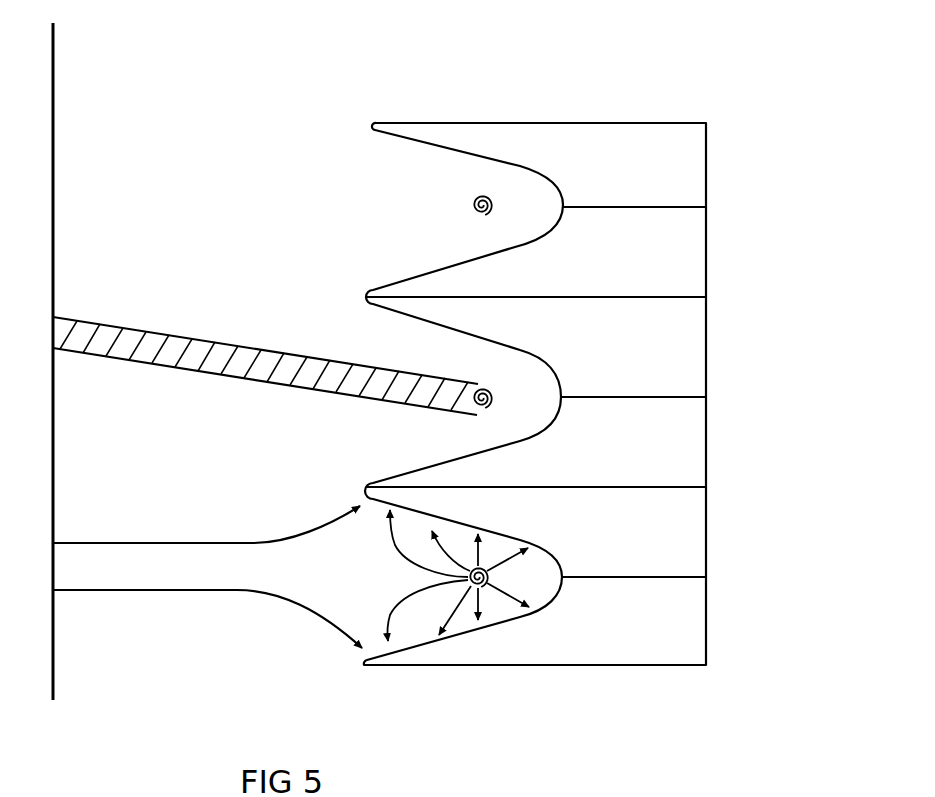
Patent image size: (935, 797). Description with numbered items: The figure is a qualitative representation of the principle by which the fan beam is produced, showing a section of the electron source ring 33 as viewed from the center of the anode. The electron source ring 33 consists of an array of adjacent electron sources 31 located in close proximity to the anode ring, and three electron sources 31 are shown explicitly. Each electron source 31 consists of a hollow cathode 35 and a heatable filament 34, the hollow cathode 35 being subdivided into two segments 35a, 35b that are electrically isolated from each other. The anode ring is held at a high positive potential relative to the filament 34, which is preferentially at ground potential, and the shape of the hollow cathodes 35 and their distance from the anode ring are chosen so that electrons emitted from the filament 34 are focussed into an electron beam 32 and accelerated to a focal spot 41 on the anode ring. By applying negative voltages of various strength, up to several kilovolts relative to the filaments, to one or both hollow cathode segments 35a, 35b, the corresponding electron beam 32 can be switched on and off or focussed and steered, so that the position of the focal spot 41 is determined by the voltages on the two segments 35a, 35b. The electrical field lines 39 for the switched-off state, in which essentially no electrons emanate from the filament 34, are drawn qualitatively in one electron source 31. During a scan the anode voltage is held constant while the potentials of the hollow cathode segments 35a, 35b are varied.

The electron source 31 is at (475, 198).
The electron beam 32 is at (225, 343).
The electron source ring 33 is at (707, 550).
The heatable filament 34 is at (472, 198).
The hollow cathode 35 is at (605, 250).
The hollow cathode segment 35a is at (692, 157).
The hollow cathode segment 35b is at (693, 240).
The electrical field lines 39 is at (223, 543).
The focal spot 41 is at (58, 320).